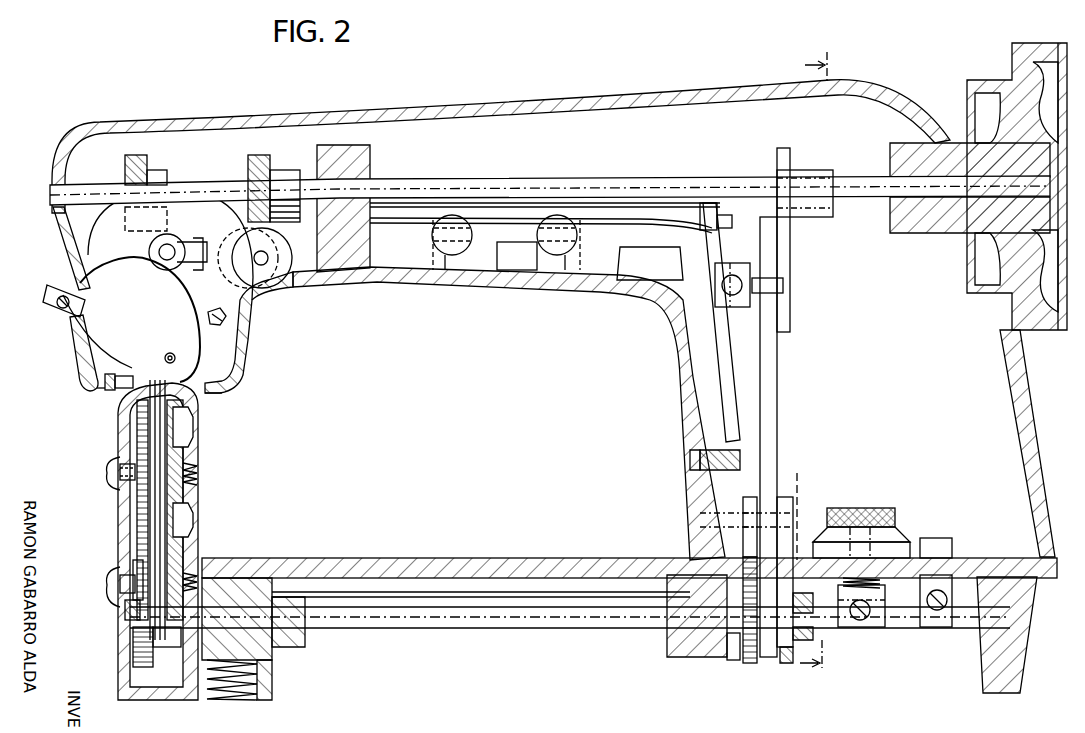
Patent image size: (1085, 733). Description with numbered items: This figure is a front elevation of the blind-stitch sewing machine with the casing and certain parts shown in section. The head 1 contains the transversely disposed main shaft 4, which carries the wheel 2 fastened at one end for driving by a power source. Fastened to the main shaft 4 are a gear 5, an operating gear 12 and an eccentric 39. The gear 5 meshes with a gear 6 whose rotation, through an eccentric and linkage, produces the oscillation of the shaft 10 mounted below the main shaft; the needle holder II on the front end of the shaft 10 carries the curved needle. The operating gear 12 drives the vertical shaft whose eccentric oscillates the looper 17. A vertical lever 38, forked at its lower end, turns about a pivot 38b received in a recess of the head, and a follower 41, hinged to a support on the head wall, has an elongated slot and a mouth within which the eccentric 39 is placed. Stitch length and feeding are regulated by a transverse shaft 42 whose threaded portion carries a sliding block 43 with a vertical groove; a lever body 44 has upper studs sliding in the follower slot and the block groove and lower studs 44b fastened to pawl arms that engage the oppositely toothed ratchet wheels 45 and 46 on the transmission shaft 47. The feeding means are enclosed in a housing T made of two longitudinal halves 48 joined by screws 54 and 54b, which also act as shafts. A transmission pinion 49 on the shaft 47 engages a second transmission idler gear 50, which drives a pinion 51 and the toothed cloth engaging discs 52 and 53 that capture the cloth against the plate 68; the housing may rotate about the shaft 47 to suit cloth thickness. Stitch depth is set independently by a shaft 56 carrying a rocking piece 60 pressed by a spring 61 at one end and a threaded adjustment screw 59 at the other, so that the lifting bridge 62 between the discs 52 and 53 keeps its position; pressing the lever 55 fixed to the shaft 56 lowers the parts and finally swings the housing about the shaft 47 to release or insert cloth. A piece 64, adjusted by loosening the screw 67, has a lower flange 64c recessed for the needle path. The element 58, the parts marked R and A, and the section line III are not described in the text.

The head 1 is at (582, 92).
The wheel 2 is at (1054, 276).
The main shaft 4 is at (668, 178).
The gear 5 is at (262, 168).
The gear 6 is at (275, 242).
The shaft 10 is at (170, 246).
The operating gear 12 is at (148, 167).
The looper 17 is at (165, 358).
The vertical lever 38 is at (713, 244).
The pivot 38b is at (715, 458).
The eccentric 39 is at (810, 172).
The follower 41 is at (777, 156).
The transverse shaft 42 is at (740, 285).
The sliding block 43 is at (737, 304).
The lever body 44 is at (770, 505).
The lower studs 44b is at (705, 514).
The ratchet wheel 45 is at (798, 545).
The ratchet wheel 46 is at (748, 600).
The transmission shaft 47 is at (565, 625).
The longitudinal halves 48 is at (190, 452).
The transmission pinion 49 is at (130, 608).
The second transmission idler gear 50 is at (135, 570).
The pinion 51 is at (140, 428).
The toothed cloth engaging disc 52 is at (172, 481).
The toothed cloth engaging disc 53 is at (152, 500).
The screw 54 is at (112, 468).
The screw 54b is at (118, 572).
The lever 55 is at (945, 540).
The shaft 56 is at (872, 600).
The bed housing 58 is at (208, 570).
The threaded adjustment screw 59 is at (895, 514).
The rocking piece 60 is at (848, 628).
The spring 61 is at (905, 585).
The lifting bridge 62 is at (122, 623).
The piece 64 is at (240, 336).
The lower flange 64c is at (207, 383).
The screw 67 is at (214, 311).
The plate 68 is at (122, 388).
The rod R is at (442, 235).
The rod A is at (570, 237).
The housing T is at (117, 510).
The needle holder II is at (126, 252).
The section line III is at (812, 365).